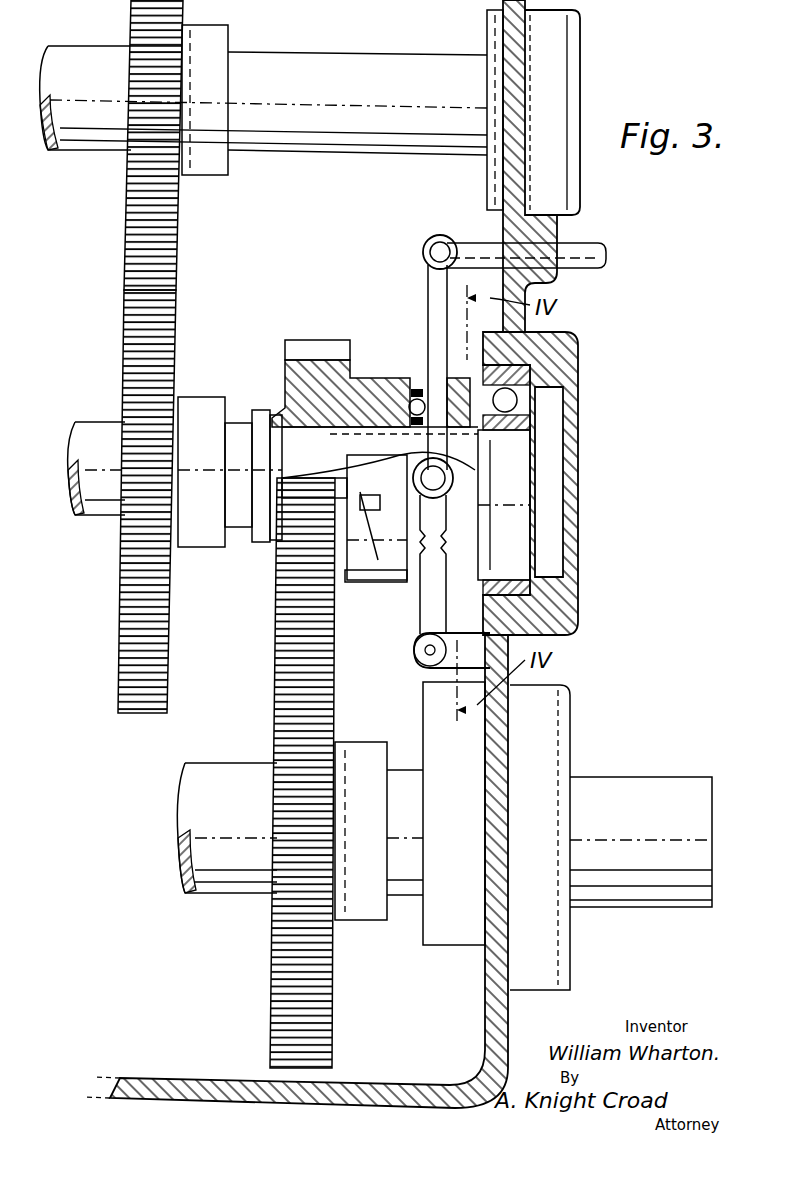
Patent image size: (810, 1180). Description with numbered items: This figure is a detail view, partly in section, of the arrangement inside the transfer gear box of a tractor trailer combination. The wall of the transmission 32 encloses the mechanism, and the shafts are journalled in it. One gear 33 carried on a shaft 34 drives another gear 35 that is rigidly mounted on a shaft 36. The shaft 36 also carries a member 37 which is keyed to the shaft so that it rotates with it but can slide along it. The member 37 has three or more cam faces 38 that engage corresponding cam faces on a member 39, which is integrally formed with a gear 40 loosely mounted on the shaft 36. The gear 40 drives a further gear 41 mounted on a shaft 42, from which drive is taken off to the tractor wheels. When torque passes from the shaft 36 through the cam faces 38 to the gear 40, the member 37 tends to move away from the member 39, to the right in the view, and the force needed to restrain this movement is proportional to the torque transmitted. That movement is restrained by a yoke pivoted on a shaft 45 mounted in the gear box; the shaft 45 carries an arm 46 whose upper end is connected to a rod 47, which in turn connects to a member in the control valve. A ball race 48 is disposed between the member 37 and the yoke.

The wall of the transmission 32 is at (505, 200).
The gear 33 is at (168, 210).
The shaft 34 is at (347, 145).
The gear 35 is at (155, 360).
The shaft 36 is at (232, 430).
The member 37 is at (365, 556).
The cam faces 38 is at (283, 622).
The member 39 is at (367, 582).
The gear 40 is at (300, 560).
The gear 41 is at (275, 938).
The shaft 42 is at (222, 780).
The shaft 45 is at (414, 650).
The arm 46 is at (436, 320).
The rod 47 is at (497, 258).
The ball race 48 is at (417, 398).